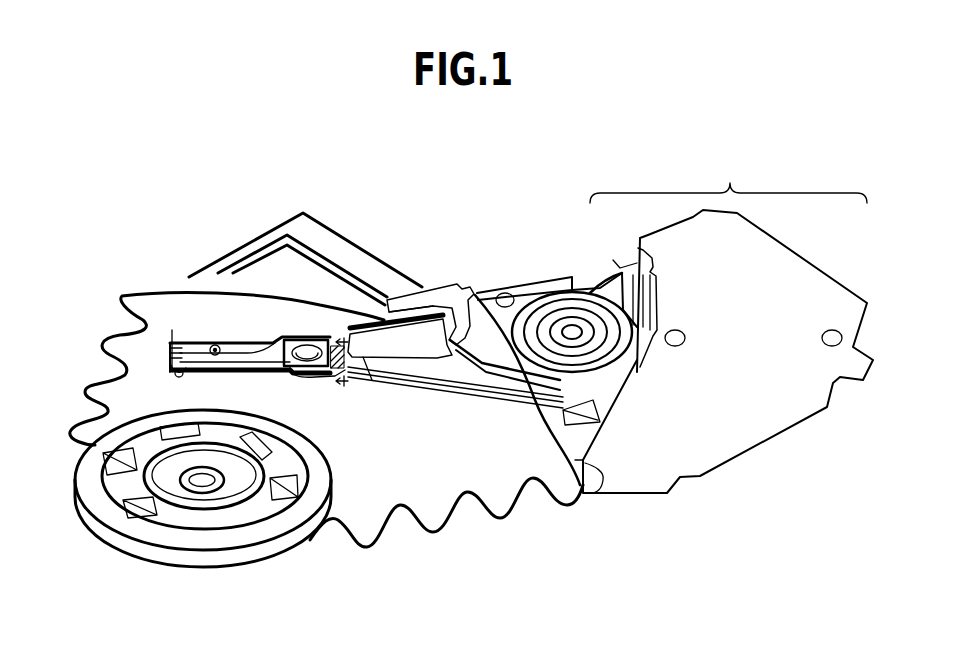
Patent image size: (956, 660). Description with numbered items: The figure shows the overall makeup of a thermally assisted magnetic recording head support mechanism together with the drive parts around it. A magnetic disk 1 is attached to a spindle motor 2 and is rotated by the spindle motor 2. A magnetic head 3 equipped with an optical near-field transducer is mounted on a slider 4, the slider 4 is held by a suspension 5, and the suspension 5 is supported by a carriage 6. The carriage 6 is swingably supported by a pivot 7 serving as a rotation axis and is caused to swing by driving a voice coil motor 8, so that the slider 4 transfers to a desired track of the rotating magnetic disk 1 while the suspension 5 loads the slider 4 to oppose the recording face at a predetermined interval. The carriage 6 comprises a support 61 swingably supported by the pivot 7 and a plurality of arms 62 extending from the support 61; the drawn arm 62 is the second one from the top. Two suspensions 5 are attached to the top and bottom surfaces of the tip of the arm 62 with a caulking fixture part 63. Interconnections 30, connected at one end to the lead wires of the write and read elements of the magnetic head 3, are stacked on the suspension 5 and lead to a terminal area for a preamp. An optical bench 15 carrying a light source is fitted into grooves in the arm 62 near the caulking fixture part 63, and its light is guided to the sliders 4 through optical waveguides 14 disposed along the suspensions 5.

The magnetic disk 1 is at (508, 485).
The spindle motor 2 is at (208, 500).
The magnetic head 3 is at (170, 345).
The slider 4 is at (170, 343).
The suspension 5 is at (228, 343).
The carriage 6 is at (520, 360).
The pivot 7 is at (572, 332).
The voice coil motor 8 is at (728, 177).
The optical waveguides 14 is at (306, 380).
The optical bench 15 is at (363, 357).
The interconnections 30 is at (267, 340).
The support 61 is at (615, 378).
The arm 62 is at (405, 368).
The caulking fixture part 63 is at (308, 350).